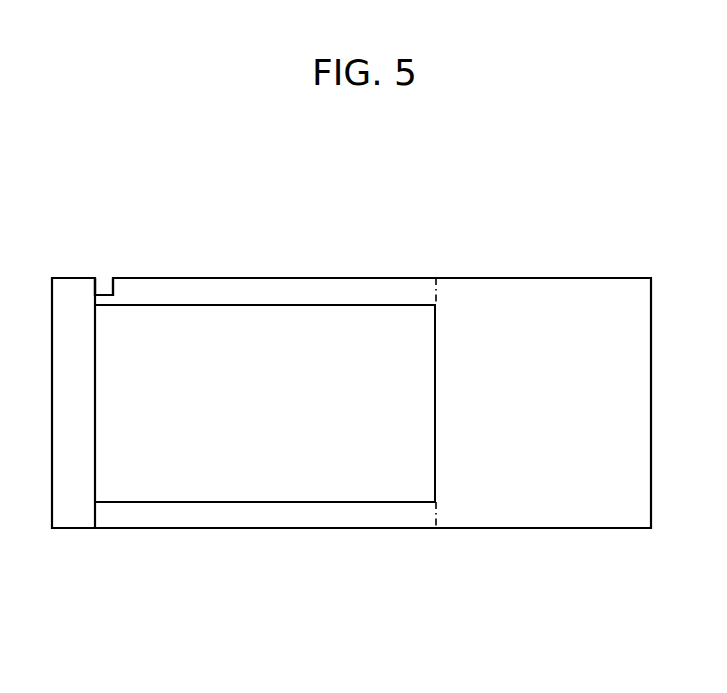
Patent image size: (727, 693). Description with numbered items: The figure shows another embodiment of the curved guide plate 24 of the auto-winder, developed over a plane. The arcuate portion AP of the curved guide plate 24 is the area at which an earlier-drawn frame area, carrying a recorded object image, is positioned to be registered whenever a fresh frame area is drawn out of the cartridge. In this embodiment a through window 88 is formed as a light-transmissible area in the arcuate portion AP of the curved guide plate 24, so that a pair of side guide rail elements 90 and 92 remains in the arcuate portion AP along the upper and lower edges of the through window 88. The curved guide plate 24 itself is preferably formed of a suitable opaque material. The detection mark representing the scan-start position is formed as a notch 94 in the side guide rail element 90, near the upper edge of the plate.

The curved guide plate 24 is at (545, 279).
The through window 88 is at (284, 416).
The side guide rail element 90 is at (352, 294).
The side guide rail element 92 is at (350, 515).
The notch 94 is at (105, 288).
The arcuate portion AP is at (434, 532).